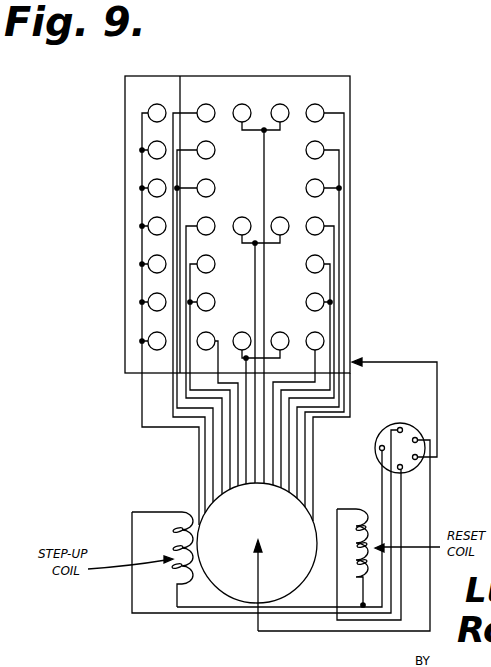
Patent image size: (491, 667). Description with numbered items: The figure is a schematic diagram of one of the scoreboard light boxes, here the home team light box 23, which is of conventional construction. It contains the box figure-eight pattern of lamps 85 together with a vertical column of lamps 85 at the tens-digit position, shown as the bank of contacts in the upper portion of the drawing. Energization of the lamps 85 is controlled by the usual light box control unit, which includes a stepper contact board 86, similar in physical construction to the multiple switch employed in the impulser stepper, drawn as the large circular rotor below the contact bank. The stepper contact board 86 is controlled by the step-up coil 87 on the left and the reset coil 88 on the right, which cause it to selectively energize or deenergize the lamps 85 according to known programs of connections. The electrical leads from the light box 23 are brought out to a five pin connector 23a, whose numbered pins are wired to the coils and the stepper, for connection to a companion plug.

The home team light box 23 is at (124, 141).
The lamps 85 is at (323, 107).
The stepper contact board 86 is at (202, 518).
The step-up coil 87 is at (178, 548).
The reset coil 88 is at (355, 509).
The five pin connector 23a is at (421, 428).